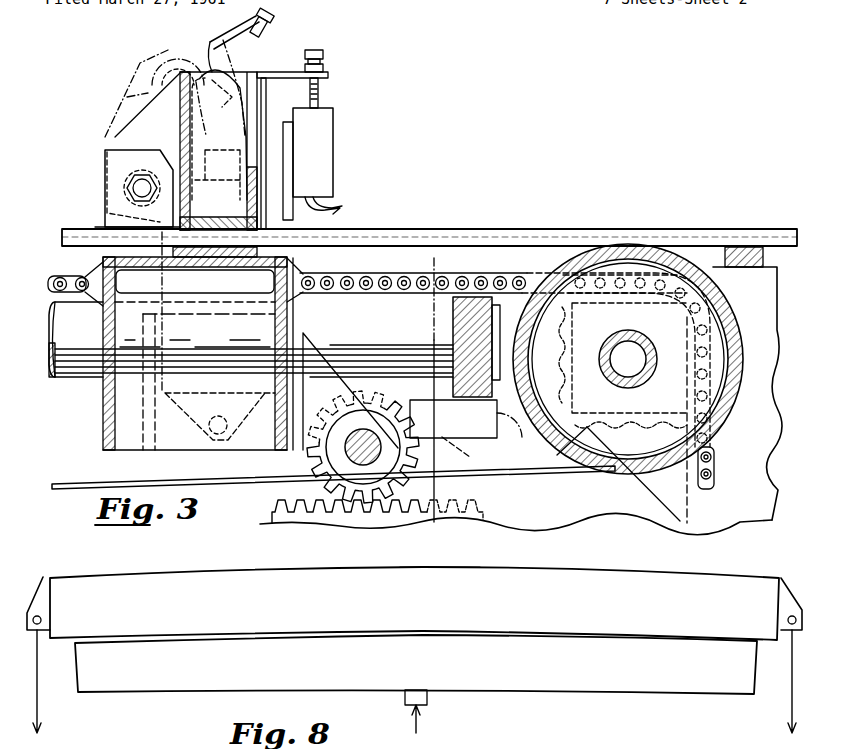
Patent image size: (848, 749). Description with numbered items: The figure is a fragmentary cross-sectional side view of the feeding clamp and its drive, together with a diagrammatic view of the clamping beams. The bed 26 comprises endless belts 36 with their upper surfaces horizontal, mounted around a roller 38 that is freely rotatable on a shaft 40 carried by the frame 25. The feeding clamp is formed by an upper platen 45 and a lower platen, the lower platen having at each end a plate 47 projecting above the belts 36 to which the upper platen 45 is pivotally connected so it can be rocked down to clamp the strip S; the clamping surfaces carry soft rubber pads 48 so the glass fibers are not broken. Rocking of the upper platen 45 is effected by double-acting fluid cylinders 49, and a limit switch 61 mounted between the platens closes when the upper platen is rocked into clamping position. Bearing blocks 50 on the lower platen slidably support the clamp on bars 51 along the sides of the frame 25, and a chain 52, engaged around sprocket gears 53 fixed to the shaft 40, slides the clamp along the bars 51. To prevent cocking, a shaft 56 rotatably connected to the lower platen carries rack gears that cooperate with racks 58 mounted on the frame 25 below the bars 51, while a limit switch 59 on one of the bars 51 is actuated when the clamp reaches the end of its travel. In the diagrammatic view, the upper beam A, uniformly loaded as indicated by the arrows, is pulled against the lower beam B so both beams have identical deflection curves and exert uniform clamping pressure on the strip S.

In FIG. 3, the frame 25 is at (648, 497).
In FIG. 3, the bed 26 is at (485, 240).
In FIG. 3, the endless belts 36 is at (100, 484).
In FIG. 3, the roller 38 is at (556, 267).
In FIG. 3, the shaft 40 is at (623, 336).
In FIG. 3, the upper platen 45 is at (175, 113).
In FIG. 3, the plate 47 is at (103, 175).
In FIG. 3, the soft rubber pads 48 is at (262, 240).
In FIG. 3, the double-acting fluid cylinders 49 is at (108, 377).
In FIG. 3, the bearing blocks 50 is at (453, 326).
In FIG. 3, the bars 51 is at (75, 370).
In FIG. 3, the chain 52 is at (70, 277).
In FIG. 3, the sprocket gears 53 is at (557, 455).
In FIG. 3, the shaft 56 is at (360, 440).
In FIG. 3, the racks 58 is at (272, 514).
In FIG. 3, the limit switch 59 is at (472, 455).
In FIG. 3, the limit switch 61 is at (333, 118).
In FIG. 3, the strip S is at (605, 228).
In FIG. 8, the strip S is at (307, 632).
In FIG. 8, the upper beam A is at (447, 578).
In FIG. 8, the lower beam B is at (500, 690).